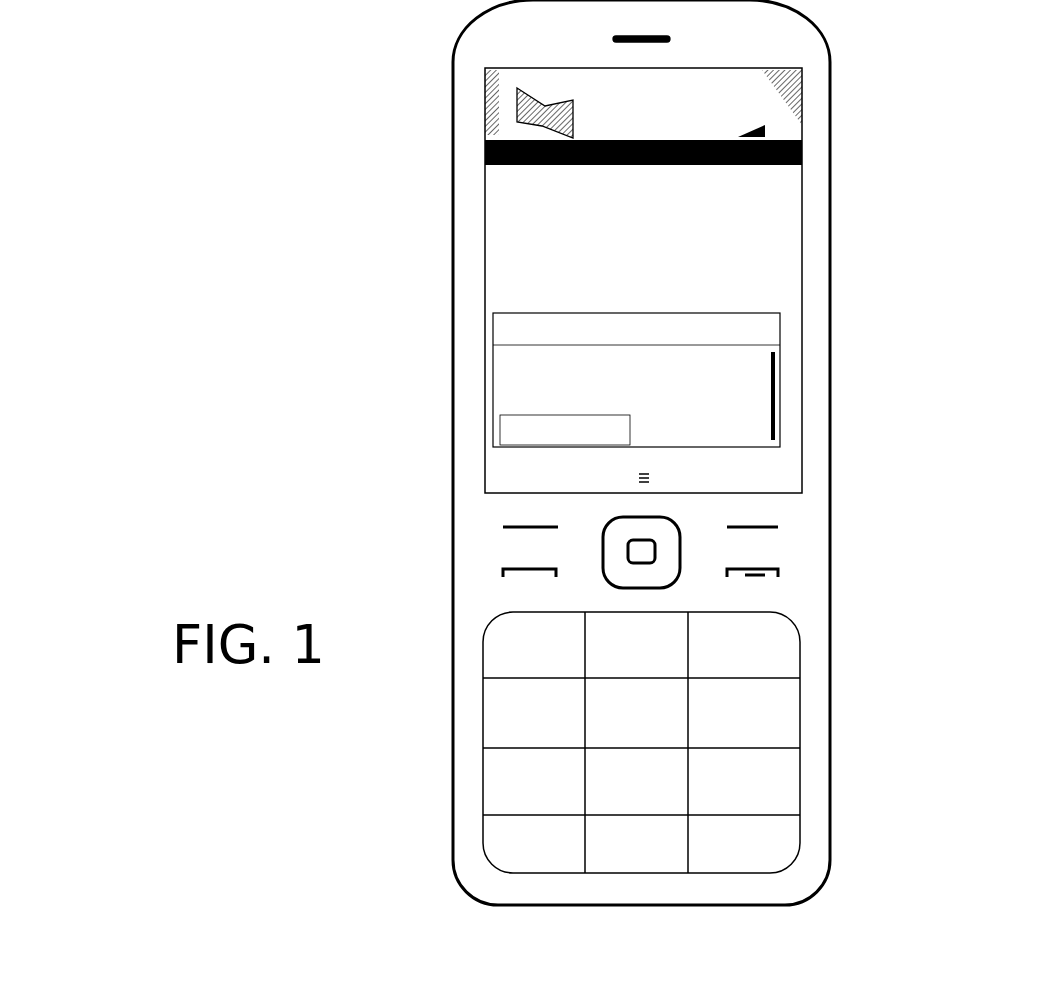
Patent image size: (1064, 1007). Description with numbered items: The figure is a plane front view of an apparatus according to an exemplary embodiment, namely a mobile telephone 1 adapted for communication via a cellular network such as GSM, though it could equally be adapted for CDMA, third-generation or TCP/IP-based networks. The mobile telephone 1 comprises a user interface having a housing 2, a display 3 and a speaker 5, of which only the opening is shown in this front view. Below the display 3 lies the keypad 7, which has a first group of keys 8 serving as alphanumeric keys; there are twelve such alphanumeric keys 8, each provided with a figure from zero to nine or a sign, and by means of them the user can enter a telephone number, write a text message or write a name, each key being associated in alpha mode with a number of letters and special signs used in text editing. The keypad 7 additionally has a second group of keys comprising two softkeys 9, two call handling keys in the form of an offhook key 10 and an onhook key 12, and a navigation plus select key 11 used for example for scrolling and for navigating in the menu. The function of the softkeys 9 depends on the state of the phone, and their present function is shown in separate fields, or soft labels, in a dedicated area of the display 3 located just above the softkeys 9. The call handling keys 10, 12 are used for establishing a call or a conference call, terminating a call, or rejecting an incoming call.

The mobile telephone 1 is at (958, 136).
The housing 2 is at (829, 87).
The display 3 is at (497, 232).
The speaker 5 is at (613, 39).
The keypad 7 is at (812, 540).
The alphanumeric keys 8 is at (782, 790).
The softkeys 9 is at (517, 522).
The offhook key 10 is at (658, 528).
The navigation plus select key 11 is at (503, 570).
The onhook key 12 is at (778, 570).